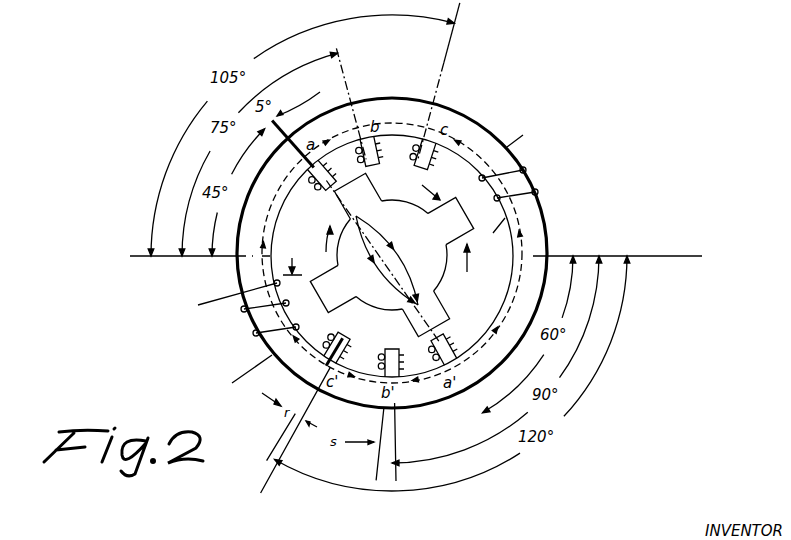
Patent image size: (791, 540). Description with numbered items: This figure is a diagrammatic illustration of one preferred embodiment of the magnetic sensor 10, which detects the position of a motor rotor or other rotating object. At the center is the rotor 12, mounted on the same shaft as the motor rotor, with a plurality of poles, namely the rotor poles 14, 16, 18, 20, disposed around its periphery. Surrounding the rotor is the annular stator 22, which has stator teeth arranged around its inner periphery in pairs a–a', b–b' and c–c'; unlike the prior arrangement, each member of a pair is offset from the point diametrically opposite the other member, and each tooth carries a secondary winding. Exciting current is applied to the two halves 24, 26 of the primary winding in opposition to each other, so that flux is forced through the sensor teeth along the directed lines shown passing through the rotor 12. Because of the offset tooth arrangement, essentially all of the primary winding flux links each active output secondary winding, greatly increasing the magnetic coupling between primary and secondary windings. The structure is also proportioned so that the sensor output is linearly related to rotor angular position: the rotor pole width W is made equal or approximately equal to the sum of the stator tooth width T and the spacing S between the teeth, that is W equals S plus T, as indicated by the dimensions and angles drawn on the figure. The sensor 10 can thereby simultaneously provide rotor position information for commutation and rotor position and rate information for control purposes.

The magnetic sensor 10 is at (506, 33).
The rotor 12 is at (448, 275).
The rotor pole 14 is at (464, 193).
The rotor pole 16 is at (345, 211).
The rotor pole 18 is at (330, 304).
The rotor pole 20 is at (438, 300).
The annular stator 22 is at (472, 118).
The primary winding half 24 is at (248, 331).
The primary winding half 26 is at (538, 192).